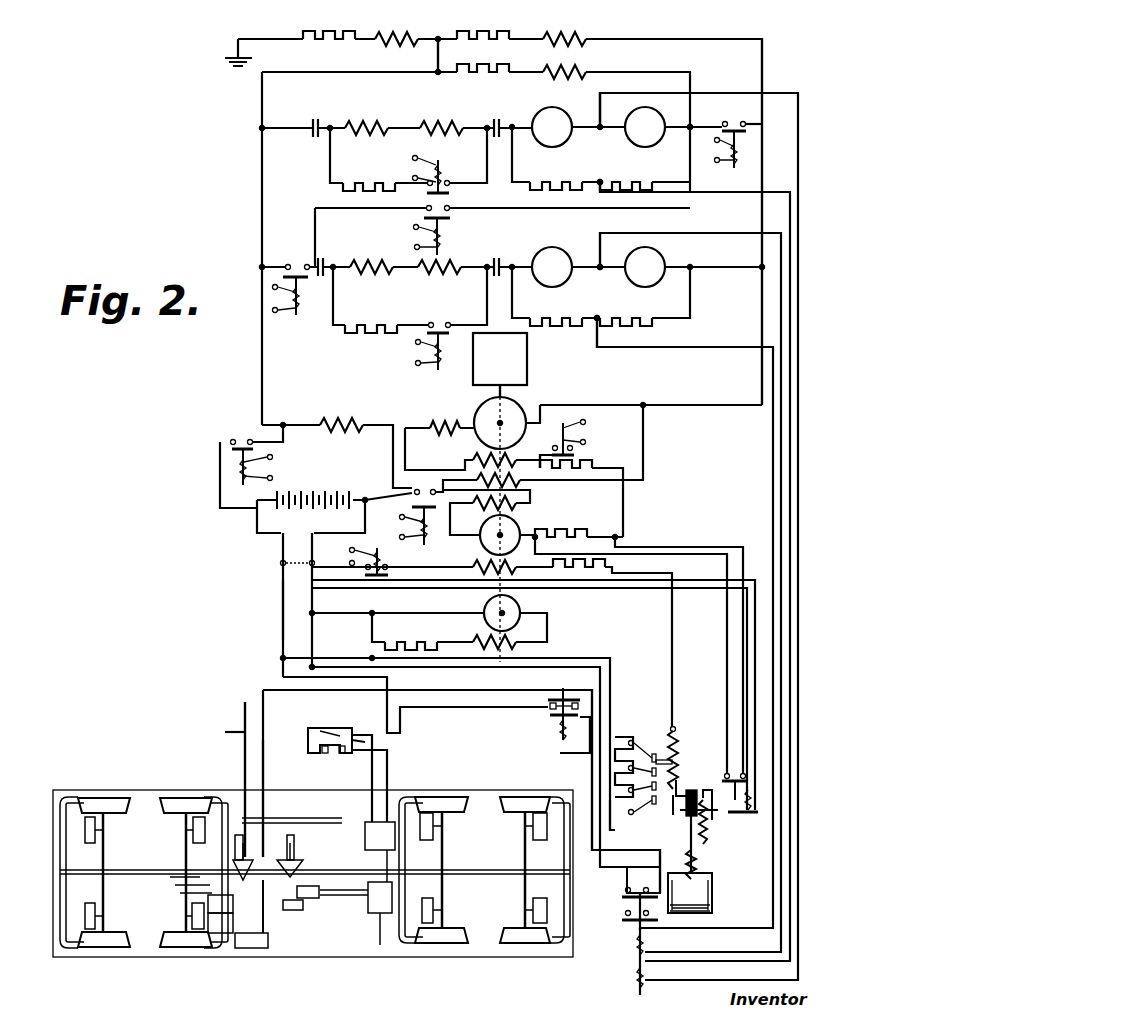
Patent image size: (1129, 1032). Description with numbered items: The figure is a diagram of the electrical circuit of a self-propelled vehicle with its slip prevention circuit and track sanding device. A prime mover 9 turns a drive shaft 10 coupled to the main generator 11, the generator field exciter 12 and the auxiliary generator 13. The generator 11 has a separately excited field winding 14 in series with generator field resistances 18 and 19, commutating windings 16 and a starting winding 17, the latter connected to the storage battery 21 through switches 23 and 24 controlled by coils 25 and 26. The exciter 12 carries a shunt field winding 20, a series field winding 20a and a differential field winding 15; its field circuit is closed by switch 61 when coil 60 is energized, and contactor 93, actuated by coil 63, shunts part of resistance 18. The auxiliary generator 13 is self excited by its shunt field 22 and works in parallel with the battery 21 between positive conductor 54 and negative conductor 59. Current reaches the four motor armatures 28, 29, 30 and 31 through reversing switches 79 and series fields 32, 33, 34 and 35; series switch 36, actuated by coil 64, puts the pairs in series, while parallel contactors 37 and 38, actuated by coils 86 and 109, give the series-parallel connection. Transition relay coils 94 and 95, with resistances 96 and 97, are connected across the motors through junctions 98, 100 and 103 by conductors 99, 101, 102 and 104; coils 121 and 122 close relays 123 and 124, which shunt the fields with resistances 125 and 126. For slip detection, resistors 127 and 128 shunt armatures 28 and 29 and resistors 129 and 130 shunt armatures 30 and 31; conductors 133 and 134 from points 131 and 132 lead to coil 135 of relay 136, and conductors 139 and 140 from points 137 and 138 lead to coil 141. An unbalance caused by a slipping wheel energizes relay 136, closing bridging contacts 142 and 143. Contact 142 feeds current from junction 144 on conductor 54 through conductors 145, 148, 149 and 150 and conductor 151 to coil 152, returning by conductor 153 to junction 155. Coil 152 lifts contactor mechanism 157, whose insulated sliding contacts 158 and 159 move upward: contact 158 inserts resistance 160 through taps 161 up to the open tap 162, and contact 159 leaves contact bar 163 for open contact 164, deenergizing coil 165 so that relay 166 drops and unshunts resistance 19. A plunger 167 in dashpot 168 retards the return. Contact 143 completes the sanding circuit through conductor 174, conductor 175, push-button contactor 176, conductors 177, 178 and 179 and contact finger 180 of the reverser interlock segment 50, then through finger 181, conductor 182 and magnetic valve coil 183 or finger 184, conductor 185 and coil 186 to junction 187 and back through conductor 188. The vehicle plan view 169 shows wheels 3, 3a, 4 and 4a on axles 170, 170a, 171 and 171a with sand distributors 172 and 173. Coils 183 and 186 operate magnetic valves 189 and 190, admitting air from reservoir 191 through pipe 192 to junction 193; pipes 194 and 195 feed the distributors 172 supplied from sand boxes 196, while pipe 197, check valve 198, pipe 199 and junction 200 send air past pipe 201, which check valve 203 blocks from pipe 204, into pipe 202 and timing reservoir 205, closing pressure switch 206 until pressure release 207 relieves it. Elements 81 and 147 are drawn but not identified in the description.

The resistance 81 is at (395, 36).
The coil 96 is at (480, 34).
The resistance 94 is at (560, 33).
The conductor 99 is at (674, 210).
The coil 102 is at (340, 43).
The conductor 101 is at (437, 60).
The coil 97 is at (490, 68).
The resistance 95 is at (570, 72).
The conductor 104 is at (640, 74).
The conductor 133 is at (615, 97).
The condenser 79 is at (498, 257).
The resistance 32 is at (372, 122).
The resistance 33 is at (440, 122).
The conductor 131 is at (598, 118).
The relay 28 is at (552, 127).
The relay 29 is at (645, 127).
The junction 103 is at (704, 115).
The switch 38 is at (735, 122).
The conductor 98 is at (764, 124).
The conductor 100 is at (260, 130).
The coil 125 is at (355, 180).
The switch 121 is at (440, 170).
The conductor 123 is at (452, 206).
The coil 127 is at (540, 180).
The junction 132 is at (600, 180).
The coil 128 is at (655, 180).
The switch arm 109 is at (738, 165).
The conductor 134 is at (698, 192).
The switch 36 is at (453, 218).
The switch 37 is at (298, 264).
The resistance 34 is at (378, 260).
The switch arm 64 is at (440, 240).
The conductor 139 is at (650, 235).
The coil 126 is at (365, 322).
The resistance 35 is at (448, 272).
The switch 124 is at (436, 322).
The coil 129 is at (540, 316).
The junction 137 is at (600, 272).
The junction 138 is at (598, 316).
The coil 130 is at (655, 316).
The relay 30 is at (552, 267).
The relay 31 is at (645, 267).
The switch arm 86 is at (300, 312).
The switch arm 122 is at (440, 365).
The motor 9 is at (528, 357).
The conductor 140 is at (710, 348).
The shaft 10 is at (505, 390).
The resistance 16 is at (428, 426).
The disc 11 is at (480, 414).
The switch 23 is at (243, 440).
The switch arm 25 is at (275, 465).
The switch 63 is at (560, 430).
The conductor 93 is at (535, 455).
The coil 18 is at (590, 463).
The resistance 14 is at (475, 462).
The battery 21 is at (330, 495).
The resistance 17 is at (525, 484).
The switch 24 is at (410, 508).
The switch arm 26 is at (410, 528).
The resistance 15 is at (480, 508).
The disc 12 is at (520, 530).
The coil 19 is at (580, 530).
The contact 61 is at (365, 572).
The switch 60 is at (380, 554).
The resistance 20a is at (470, 567).
The conductor 147 is at (281, 557).
The conductor 54 is at (282, 618).
The conductor 155 is at (398, 601).
The disc 13 is at (482, 607).
The conductor 20 is at (520, 573).
The coil 59 is at (312, 638).
The resistance 22 is at (480, 640).
The conductor 144 is at (281, 658).
The conductor 145 is at (300, 678).
The conductor 182 is at (262, 702).
The conductor 148 is at (427, 763).
The switch 176 is at (548, 698).
The spring 177 is at (555, 720).
The coil 160 is at (618, 740).
The contacts 162 is at (655, 735).
The resistance 164 is at (680, 750).
The contact 161 is at (678, 770).
The contact 163 is at (684, 800).
The armature 158 is at (682, 812).
The rod 157 is at (689, 832).
The spring 159 is at (712, 820).
The conductor 153 is at (680, 845).
The spring 152 is at (700, 855).
The switch 166 is at (750, 781).
The spring 165 is at (760, 805).
The conductor 151 is at (628, 874).
The switch box 150 is at (644, 880).
The switch 142 is at (625, 891).
The switch 143 is at (625, 912).
The dashpot 167 is at (705, 895).
The liquid 168 is at (711, 910).
The rod 175 is at (625, 915).
The conductor 174 is at (655, 928).
The thermostat 136 is at (636, 940).
The conductor 141 is at (636, 966).
The thermostat 135 is at (636, 980).
The conductor 178 is at (510, 708).
The conductor 179 is at (365, 742).
The controller 50 is at (307, 740).
The contact 180 is at (325, 733).
The conductor 188 is at (219, 734).
The contact 184 is at (326, 753).
The contact 181 is at (344, 754).
The conductor 185 is at (265, 760).
The conductor 149 is at (588, 752).
The shaft 194 is at (90, 875).
The wheel 4 is at (104, 945).
The wheel 4a is at (185, 945).
The wheel 3 is at (445, 943).
The wheel 3a is at (520, 943).
The axle 171 is at (101, 854).
The axle 171a is at (184, 848).
The axle 170 is at (443, 882).
The axle 170a is at (522, 830).
The brake drum 196 is at (433, 910).
The frame pipe 172 is at (404, 945).
The frame pipe 173 is at (564, 945).
The pipe 183 is at (265, 818).
The valve 186 is at (245, 840).
The valve 187 is at (296, 842).
The valve 189 is at (245, 865).
The valve 190 is at (300, 866).
The pipe 193 is at (198, 876).
The pipe 195 is at (208, 885).
The pipe 197 is at (210, 893).
The valve 199 is at (236, 904).
The valve 198 is at (236, 923).
The valve 200 is at (292, 910).
The pipe 201 is at (313, 884).
The valve 204 is at (368, 895).
The box 206 is at (370, 822).
The reservoir 191 is at (245, 948).
The pipe 192 is at (265, 945).
The pipe 202 is at (330, 893).
The pipe 203 is at (350, 897).
The pipe 205 is at (380, 935).
The pipe 207 is at (380, 945).
The pipe 169 is at (385, 948).